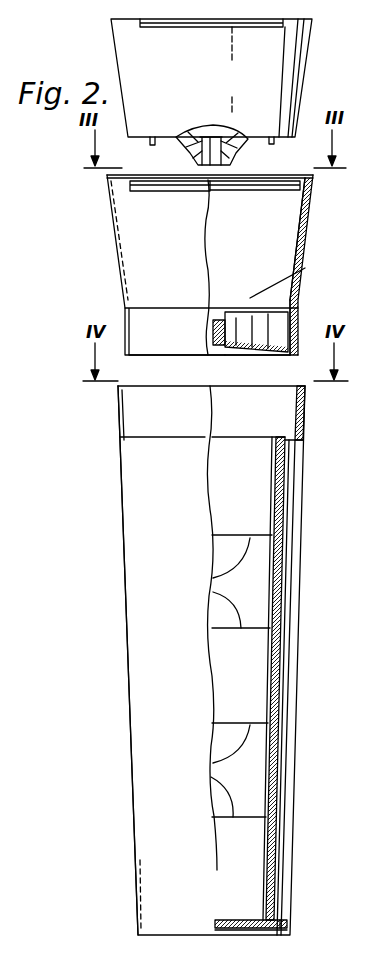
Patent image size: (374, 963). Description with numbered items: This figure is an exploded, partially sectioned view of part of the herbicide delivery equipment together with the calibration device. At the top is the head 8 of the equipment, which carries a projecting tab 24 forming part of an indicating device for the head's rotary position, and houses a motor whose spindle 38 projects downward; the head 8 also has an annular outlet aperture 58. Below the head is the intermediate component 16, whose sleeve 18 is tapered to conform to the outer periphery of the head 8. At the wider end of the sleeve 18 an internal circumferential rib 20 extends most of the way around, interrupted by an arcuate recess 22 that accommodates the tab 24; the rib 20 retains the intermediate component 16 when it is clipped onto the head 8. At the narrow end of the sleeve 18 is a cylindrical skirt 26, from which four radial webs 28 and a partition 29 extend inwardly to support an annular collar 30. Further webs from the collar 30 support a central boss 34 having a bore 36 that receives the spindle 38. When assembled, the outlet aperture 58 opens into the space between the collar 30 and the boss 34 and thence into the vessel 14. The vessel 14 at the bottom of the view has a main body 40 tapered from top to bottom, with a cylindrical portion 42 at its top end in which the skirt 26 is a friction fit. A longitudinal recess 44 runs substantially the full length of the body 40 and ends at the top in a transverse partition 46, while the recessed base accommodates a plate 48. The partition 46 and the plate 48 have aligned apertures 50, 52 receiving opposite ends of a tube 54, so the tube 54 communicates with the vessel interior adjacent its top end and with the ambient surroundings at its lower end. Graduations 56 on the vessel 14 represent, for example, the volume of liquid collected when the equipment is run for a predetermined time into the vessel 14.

The head 8 is at (305, 62).
The vessel 14 is at (114, 644).
The intermediate component 16 is at (108, 263).
The sleeve 18 is at (304, 248).
The internal circumferential rib 20 is at (300, 176).
The arcuate recess 22 is at (191, 195).
The projecting tab 24 is at (253, 18).
The cylindrical skirt 26 is at (294, 330).
The radial webs 28 is at (295, 276).
The partition 29 is at (238, 352).
The annular collar 30 is at (229, 312).
The central boss 34 is at (218, 358).
The bore 36 is at (212, 329).
The spindle 38 is at (226, 165).
The main body 40 is at (130, 746).
The cylindrical portion 42 is at (118, 420).
The longitudinal recess 44 is at (292, 618).
The transverse partition 46 is at (297, 445).
The plate 48 is at (245, 931).
The aperture 50 is at (285, 437).
The aperture 52 is at (284, 920).
The tube 54 is at (280, 725).
The graduations 56 is at (213, 592).
The annular outlet aperture 58 is at (192, 160).